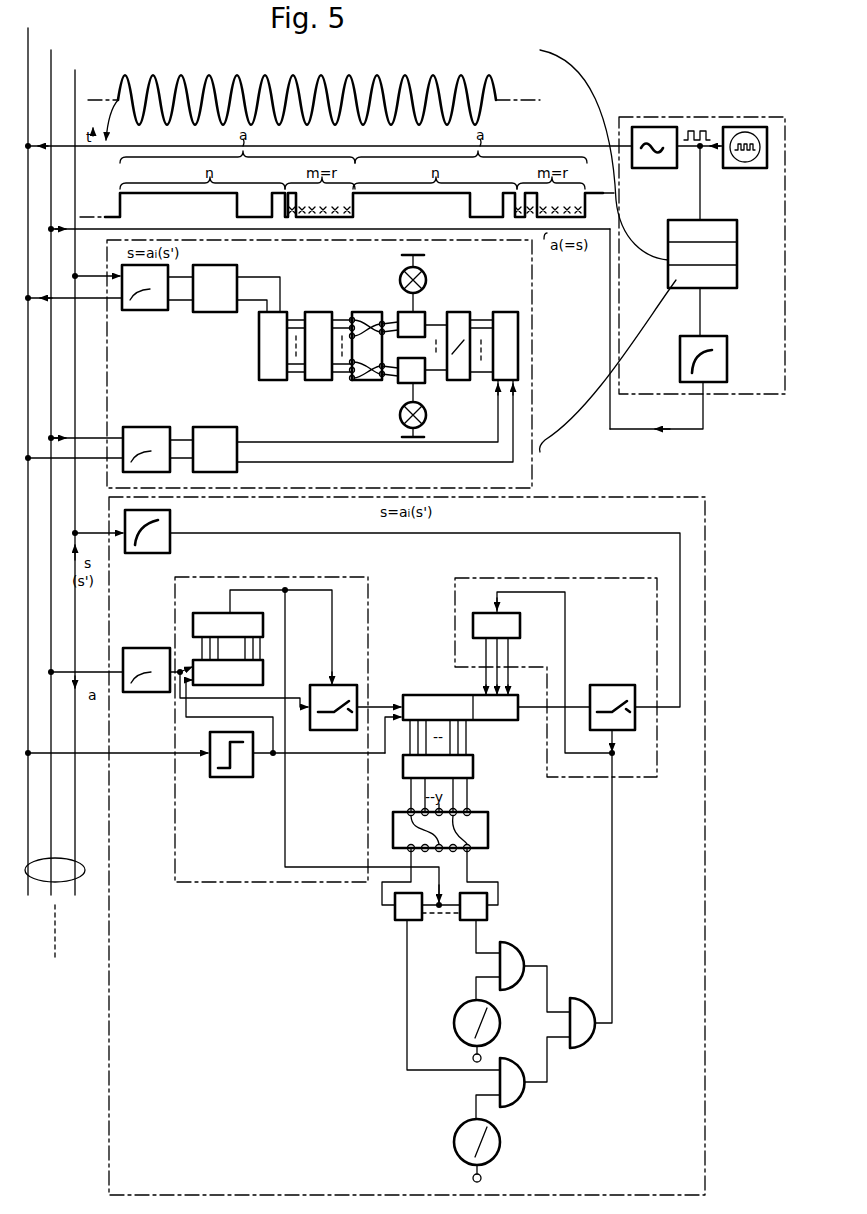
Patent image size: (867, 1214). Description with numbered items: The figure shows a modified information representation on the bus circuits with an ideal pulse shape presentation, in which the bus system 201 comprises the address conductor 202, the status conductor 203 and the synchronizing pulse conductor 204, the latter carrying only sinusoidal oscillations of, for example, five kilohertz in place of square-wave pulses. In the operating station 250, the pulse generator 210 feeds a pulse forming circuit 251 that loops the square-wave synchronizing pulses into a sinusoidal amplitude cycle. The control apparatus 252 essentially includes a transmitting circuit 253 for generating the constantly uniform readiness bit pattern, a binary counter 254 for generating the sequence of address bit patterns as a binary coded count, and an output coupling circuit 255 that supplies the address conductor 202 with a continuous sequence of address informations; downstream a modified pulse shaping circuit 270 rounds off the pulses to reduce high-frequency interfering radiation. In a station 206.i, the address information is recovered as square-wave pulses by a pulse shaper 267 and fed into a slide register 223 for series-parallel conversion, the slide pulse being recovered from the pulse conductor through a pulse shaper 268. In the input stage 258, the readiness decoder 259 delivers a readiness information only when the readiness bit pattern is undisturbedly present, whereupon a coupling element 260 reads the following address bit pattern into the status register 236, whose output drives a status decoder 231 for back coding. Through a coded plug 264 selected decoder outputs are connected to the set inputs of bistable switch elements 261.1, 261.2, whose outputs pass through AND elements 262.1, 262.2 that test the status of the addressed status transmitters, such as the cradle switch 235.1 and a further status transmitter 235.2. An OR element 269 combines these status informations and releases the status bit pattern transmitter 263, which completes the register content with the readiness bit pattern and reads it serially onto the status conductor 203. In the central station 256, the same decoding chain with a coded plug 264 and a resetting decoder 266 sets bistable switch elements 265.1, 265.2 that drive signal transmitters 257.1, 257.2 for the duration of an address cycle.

The bus system 201 is at (85, 870).
The address conductor 202 is at (51, 58).
The status conductor 203 is at (75, 78).
The synchronizing pulse conductor 204 is at (28, 40).
The station 206.i is at (455, 505).
The pulse generator 210 is at (715, 58).
The slide register 223 is at (203, 668).
The status decoder 231 is at (318, 312).
The cradle switch 235.1 is at (456, 1021).
The status transmitter 235.2 is at (456, 1141).
The status register 236 is at (518, 328).
The operating station 250 is at (770, 394).
The pulse forming circuit 251 is at (663, 127).
The control apparatus 252 is at (762, 228).
The transmitting circuit 253 is at (668, 228).
The binary counter 254 is at (612, 148).
The output coupling circuit 255 is at (614, 384).
The central station 256 is at (170, 490).
The signal transmitter 257.1 is at (426, 280).
The signal transmitter 257.2 is at (426, 415).
The input stage 258 is at (210, 312).
The readiness decoder 259 is at (205, 620).
The coupling element 260 is at (318, 688).
The bistable switch element 261.1 is at (488, 913).
The bistable switch element 261.2 is at (395, 912).
The AND element 262.1 is at (520, 958).
The AND element 262.2 is at (520, 1095).
The status bit pattern transmitter 263 is at (455, 612).
The coded plug 264 is at (360, 385).
The bistable switch element 265.1 is at (398, 315).
The bistable switch element 265.2 is at (400, 383).
The resetting decoder 266 is at (462, 312).
The pulse shaper 267 is at (140, 292).
The pulse shaper 268 is at (140, 688).
The OR element 269 is at (588, 1035).
The pulse shaping circuit 270 is at (705, 372).